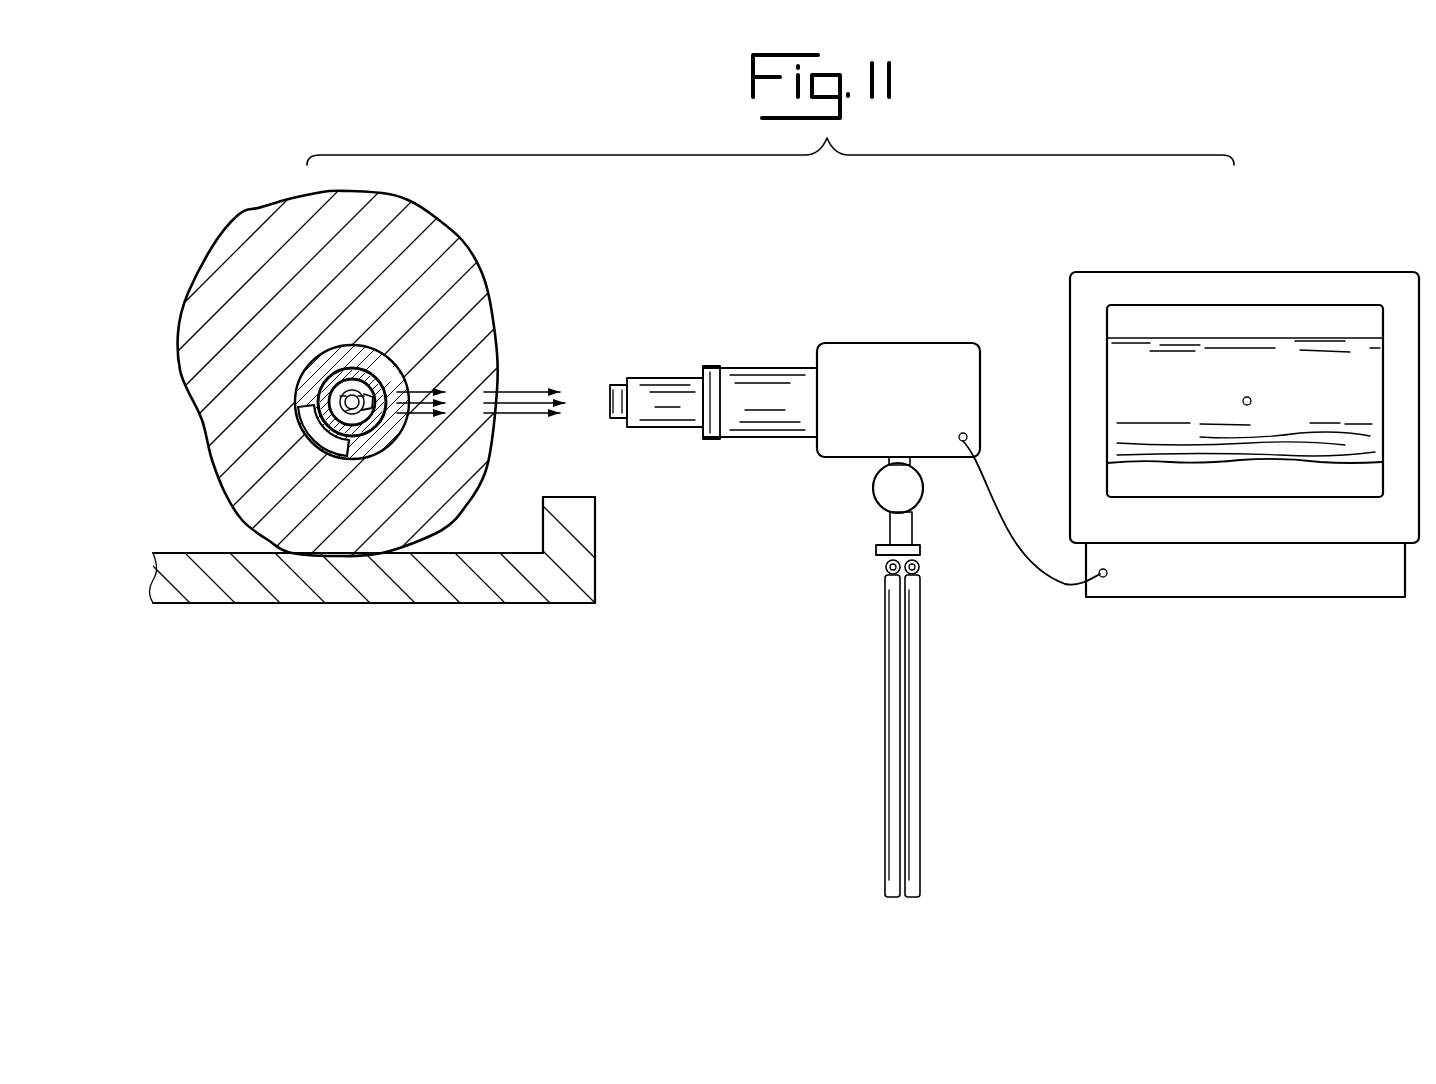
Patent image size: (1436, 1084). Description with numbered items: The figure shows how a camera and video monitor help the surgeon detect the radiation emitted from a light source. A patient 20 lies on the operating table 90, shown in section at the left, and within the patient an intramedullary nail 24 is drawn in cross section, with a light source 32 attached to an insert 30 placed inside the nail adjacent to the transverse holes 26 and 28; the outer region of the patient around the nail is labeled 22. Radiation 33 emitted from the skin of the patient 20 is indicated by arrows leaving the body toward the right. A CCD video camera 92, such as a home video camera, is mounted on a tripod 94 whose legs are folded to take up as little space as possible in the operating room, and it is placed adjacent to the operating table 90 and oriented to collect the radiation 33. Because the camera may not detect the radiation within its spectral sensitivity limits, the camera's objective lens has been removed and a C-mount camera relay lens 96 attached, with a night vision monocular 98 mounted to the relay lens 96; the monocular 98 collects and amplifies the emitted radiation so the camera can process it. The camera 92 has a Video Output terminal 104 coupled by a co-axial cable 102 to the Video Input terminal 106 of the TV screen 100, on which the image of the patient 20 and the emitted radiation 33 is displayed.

The patient 20 is at (420, 208).
The outer membrane 22 is at (313, 383).
The intramedullary nail 24 is at (349, 414).
The transverse hole 26 is at (388, 386).
The transverse hole 28 is at (313, 415).
The insert 30 is at (342, 368).
The light source 32 is at (372, 418).
The radiation 33 is at (513, 388).
The operating table 90 is at (387, 593).
The video camera 92 is at (870, 352).
The tripod 94 is at (912, 527).
The camera relay lens 96 is at (773, 413).
The night vision monocular 98 is at (657, 380).
The TV screen 100 is at (1088, 313).
The co-axial cable 102 is at (1000, 522).
The Video Output terminal 104 is at (963, 433).
The Video Input terminal 106 is at (1108, 575).